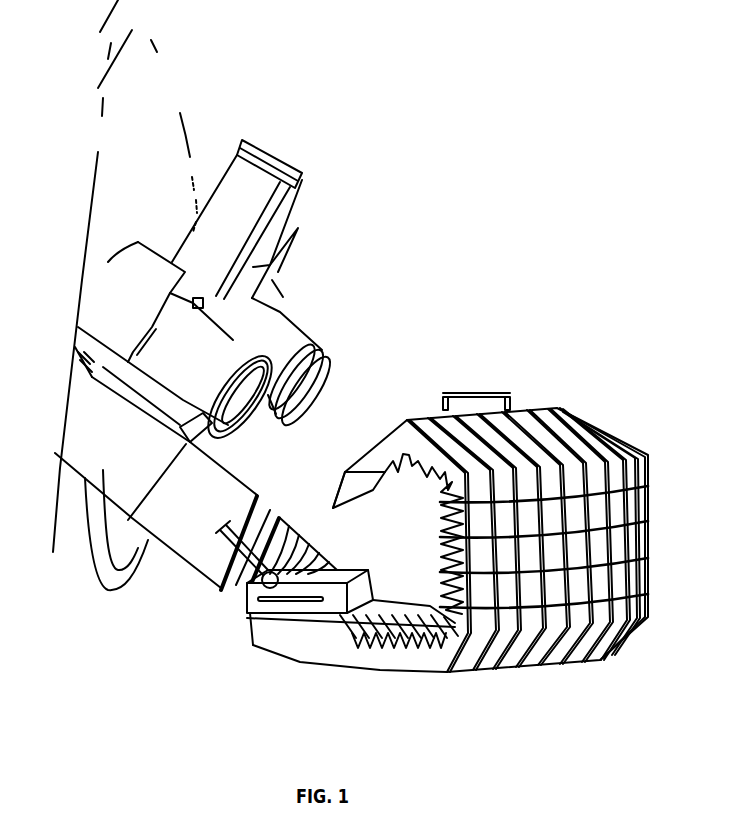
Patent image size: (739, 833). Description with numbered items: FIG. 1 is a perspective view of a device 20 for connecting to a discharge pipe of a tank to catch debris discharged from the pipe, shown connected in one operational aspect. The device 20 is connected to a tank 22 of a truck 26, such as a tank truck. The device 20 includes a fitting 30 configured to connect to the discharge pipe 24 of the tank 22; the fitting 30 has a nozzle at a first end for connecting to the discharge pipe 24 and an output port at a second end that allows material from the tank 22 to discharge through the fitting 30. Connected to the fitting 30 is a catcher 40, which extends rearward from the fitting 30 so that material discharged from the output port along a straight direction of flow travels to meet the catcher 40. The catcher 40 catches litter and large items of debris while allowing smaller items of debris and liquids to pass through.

The device 20 is at (432, 479).
The tank 22 is at (198, 104).
The discharge pipe 24 is at (168, 584).
The truck 26 is at (259, 54).
The fitting 30 is at (301, 493).
The catcher 40 is at (600, 382).